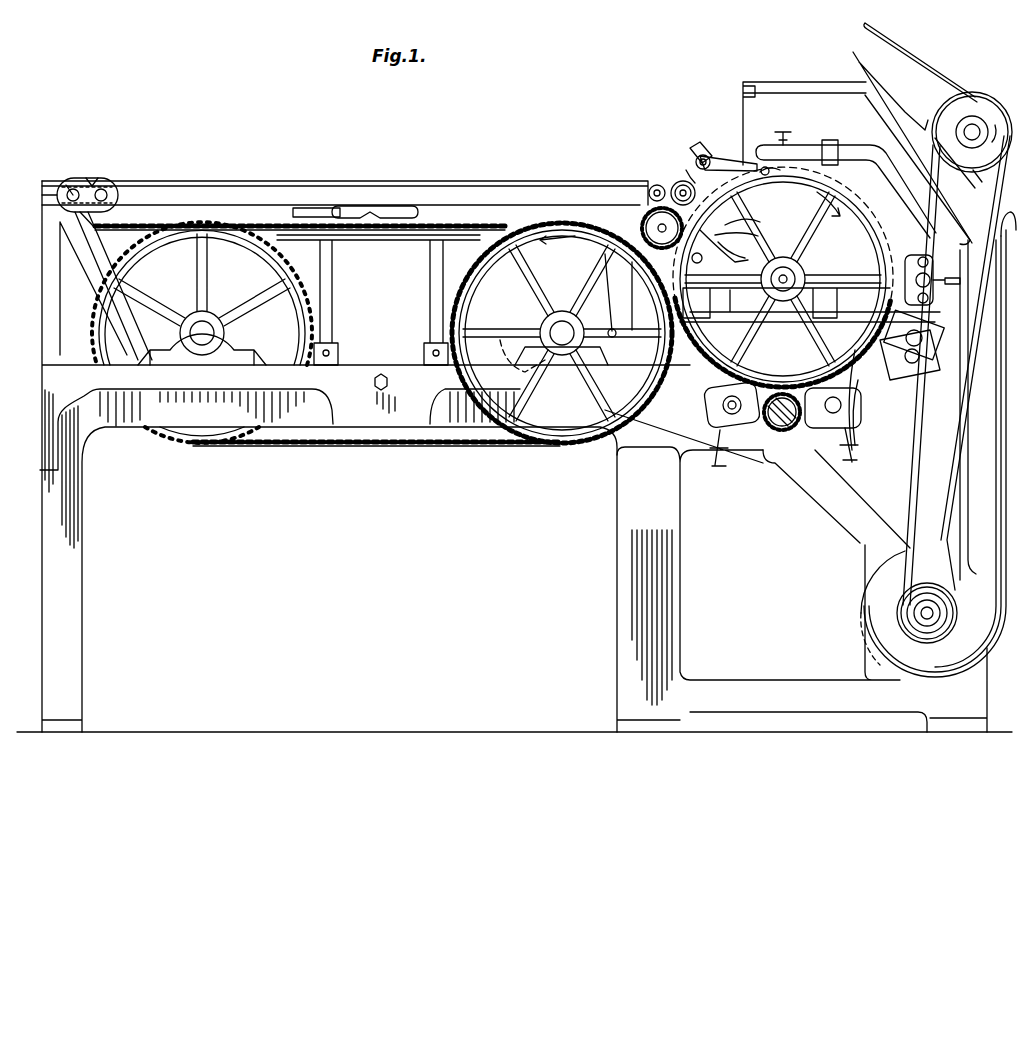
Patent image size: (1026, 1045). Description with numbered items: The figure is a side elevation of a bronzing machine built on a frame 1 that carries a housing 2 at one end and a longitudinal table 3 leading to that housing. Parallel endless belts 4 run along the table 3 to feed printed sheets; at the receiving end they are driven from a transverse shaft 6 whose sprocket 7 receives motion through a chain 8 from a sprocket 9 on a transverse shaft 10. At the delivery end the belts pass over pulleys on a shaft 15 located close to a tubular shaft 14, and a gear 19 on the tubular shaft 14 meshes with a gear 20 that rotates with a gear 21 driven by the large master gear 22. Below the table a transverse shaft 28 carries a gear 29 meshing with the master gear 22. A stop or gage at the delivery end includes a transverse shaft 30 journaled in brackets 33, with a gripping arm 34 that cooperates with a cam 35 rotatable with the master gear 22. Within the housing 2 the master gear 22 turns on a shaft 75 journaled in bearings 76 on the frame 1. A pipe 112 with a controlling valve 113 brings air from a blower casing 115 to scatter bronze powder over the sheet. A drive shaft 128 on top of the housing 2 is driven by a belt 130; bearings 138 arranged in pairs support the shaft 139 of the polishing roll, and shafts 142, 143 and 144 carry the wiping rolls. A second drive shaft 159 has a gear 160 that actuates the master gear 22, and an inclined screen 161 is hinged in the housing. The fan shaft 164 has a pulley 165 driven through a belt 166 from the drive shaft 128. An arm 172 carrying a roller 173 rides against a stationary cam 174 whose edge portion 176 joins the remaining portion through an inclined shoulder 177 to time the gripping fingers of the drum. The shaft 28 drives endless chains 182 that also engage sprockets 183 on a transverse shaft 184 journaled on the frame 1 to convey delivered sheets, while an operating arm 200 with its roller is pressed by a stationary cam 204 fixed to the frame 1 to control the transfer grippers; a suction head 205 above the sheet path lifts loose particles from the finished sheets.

The frame 1 is at (80, 540).
The housing 2 is at (832, 94).
The table 3 is at (338, 196).
The endless belts 4 is at (275, 181).
The transverse shaft 6 is at (112, 186).
The sprocket 7 is at (92, 178).
The chain 8 is at (93, 212).
The sprocket 9 is at (70, 178).
The transverse shaft 10 is at (60, 202).
The tubular shaft 14 is at (688, 170).
The shaft 15 is at (660, 186).
The gear 19 is at (680, 182).
The gear 20 is at (648, 204).
The gear 21 is at (645, 228).
The master gear 22 is at (768, 378).
The shaft 28 is at (562, 333).
The gear 29 is at (582, 444).
The transverse shaft 30 is at (708, 156).
The brackets 33 is at (705, 150).
The gripping arm 34 is at (735, 162).
The cam 35 is at (762, 168).
The shaft 75 is at (796, 275).
The bearings 76 is at (745, 312).
The pipe 112 is at (858, 148).
The controlling valve 113 is at (786, 132).
The blower casing 115 is at (957, 680).
The drive shaft 128 is at (974, 130).
The belt 130 is at (905, 48).
The bearings 138 is at (896, 308).
The shaft 139 is at (918, 255).
The shaft 142 is at (935, 380).
The shaft 143 is at (882, 428).
The shaft 144 is at (700, 420).
The second drive shaft 159 is at (780, 416).
The gear 160 is at (812, 430).
The inclined screen 161 is at (935, 100).
The fan shaft 164 is at (925, 615).
The pulley 165 is at (914, 598).
The belt 166 is at (921, 470).
The arm 172 is at (740, 252).
The roller 173 is at (723, 250).
The stationary cam 174 is at (742, 228).
The cam portion 176 is at (735, 238).
The inclined shoulder 177 is at (640, 296).
The endless chains 182 is at (335, 443).
The sprockets 183 is at (308, 300).
The transverse shaft 184 is at (204, 332).
The operating arm 200 is at (612, 305).
The stationary cam 204 is at (505, 360).
The suction head 205 is at (400, 210).